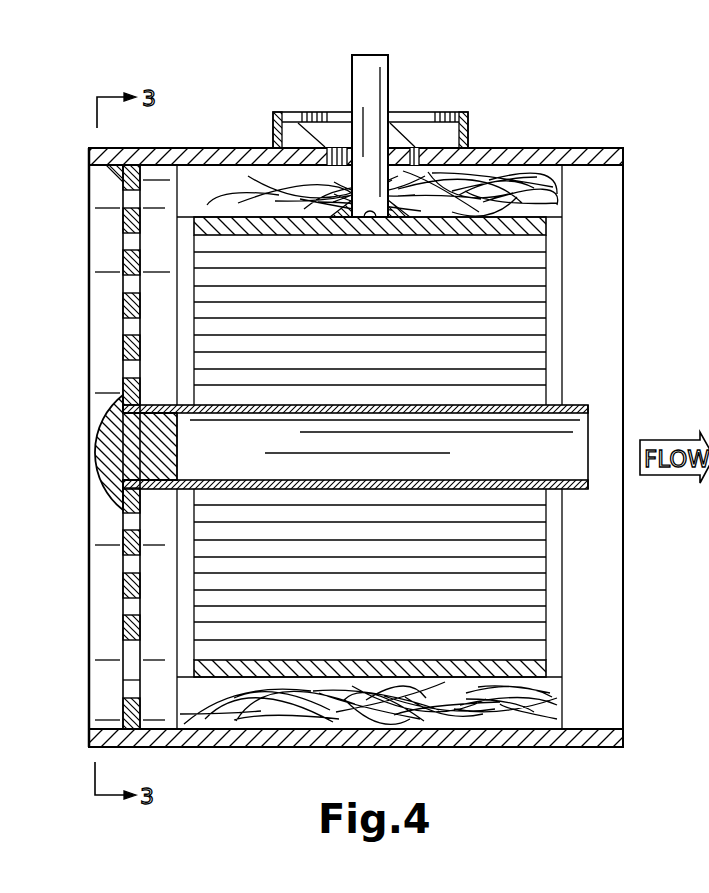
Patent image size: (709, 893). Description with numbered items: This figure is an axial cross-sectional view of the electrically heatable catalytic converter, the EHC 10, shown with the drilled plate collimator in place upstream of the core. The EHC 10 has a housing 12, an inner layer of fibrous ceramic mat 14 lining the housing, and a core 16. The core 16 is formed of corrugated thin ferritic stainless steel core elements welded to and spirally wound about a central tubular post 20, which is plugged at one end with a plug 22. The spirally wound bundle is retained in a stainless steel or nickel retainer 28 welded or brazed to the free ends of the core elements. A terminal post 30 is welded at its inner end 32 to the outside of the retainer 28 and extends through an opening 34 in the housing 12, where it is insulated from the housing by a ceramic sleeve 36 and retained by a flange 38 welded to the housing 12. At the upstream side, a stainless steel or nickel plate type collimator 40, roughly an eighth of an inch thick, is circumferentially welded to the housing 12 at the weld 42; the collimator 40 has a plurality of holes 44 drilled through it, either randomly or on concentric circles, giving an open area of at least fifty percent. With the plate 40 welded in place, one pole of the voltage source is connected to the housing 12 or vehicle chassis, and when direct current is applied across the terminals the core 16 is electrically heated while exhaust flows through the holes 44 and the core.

The EHC 10 is at (550, 126).
The housing 12 is at (623, 148).
The inner layer of fibrous ceramic mat 14 is at (540, 200).
The core 16 is at (178, 624).
The central tubular post 20 is at (455, 480).
The plug 22 is at (97, 450).
The retainer 28 is at (440, 232).
The terminal post 30 is at (372, 83).
The inner end 32 is at (367, 217).
The opening 34 is at (330, 147).
The ceramic sleeve 36 is at (428, 137).
The flange 38 is at (283, 112).
The plate type collimator 40 is at (128, 312).
The circumferential weld 42 is at (118, 168).
The holes 44 is at (128, 608).